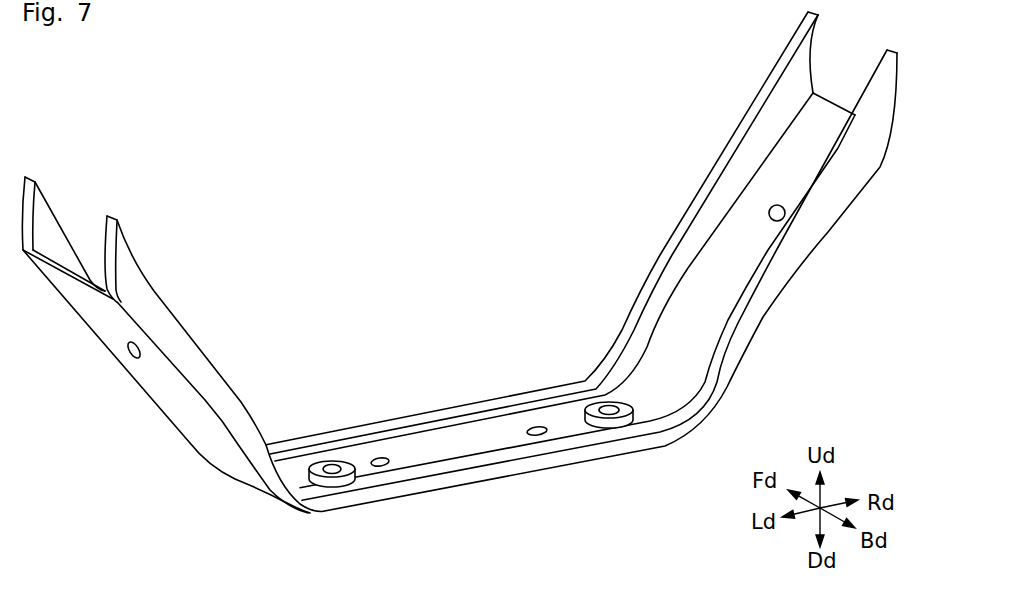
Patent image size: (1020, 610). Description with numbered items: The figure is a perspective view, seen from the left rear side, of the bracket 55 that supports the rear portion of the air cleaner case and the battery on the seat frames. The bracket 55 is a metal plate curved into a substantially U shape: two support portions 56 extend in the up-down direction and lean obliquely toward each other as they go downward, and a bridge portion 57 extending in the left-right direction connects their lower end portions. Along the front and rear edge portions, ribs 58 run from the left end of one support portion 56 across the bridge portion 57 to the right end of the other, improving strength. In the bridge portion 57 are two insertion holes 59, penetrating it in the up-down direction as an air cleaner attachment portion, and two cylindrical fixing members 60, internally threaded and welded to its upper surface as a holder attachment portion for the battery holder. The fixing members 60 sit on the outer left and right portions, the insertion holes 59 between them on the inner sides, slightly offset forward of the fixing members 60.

The bracket 55 is at (462, 276).
The support portion 56 is at (157, 377).
The bridge portion 57 is at (428, 452).
The rib 58 is at (467, 408).
The insertion hole 59 is at (382, 457).
The fixing member 60 is at (333, 461).